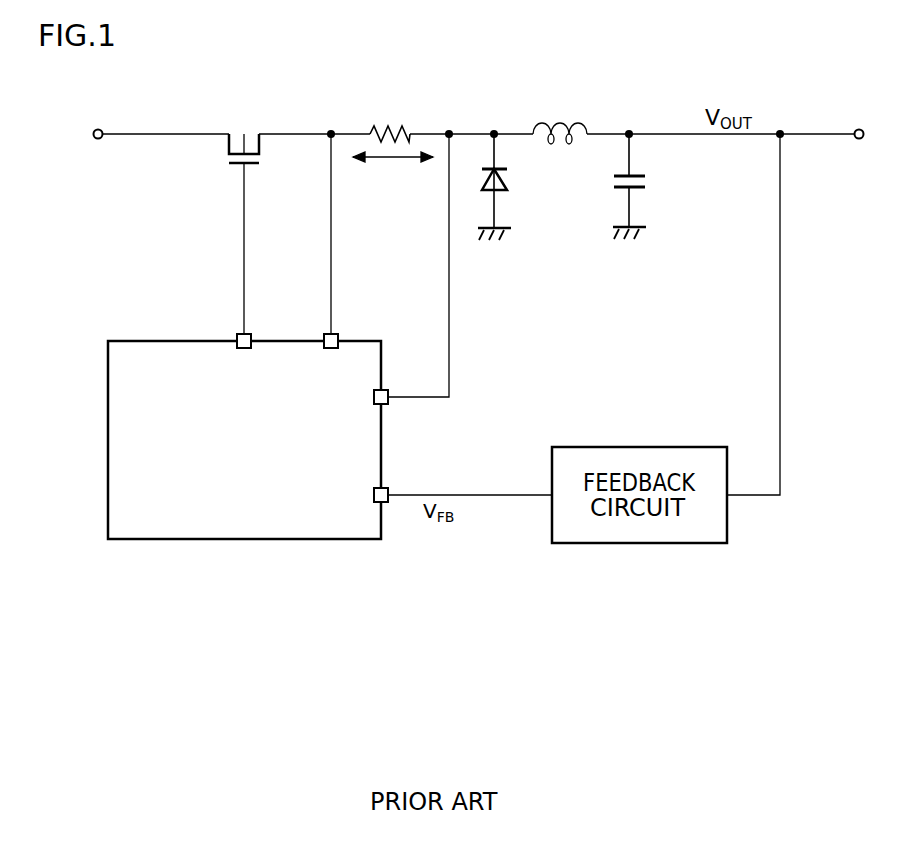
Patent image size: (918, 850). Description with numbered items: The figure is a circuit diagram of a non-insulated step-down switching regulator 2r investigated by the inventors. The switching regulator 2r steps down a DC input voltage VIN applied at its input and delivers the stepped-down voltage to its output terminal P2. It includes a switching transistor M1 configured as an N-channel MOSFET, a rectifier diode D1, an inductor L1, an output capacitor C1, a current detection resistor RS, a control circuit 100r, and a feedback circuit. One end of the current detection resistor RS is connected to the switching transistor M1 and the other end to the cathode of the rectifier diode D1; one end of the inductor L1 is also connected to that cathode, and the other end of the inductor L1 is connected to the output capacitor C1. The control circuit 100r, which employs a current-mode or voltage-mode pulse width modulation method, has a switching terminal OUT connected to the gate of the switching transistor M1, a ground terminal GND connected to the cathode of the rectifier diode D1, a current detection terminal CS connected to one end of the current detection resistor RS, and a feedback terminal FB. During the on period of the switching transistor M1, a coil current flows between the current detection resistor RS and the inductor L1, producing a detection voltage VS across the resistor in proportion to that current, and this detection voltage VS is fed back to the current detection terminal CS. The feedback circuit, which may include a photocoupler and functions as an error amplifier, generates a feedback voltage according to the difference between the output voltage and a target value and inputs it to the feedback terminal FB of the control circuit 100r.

The switching transistor M1 is at (238, 130).
The current detection resistor RS is at (380, 128).
The inductor L1 is at (576, 127).
The rectifier diode D1 is at (509, 182).
The output capacitor C1 is at (649, 182).
The output terminal P2 is at (866, 128).
The control circuit 100r is at (273, 444).
The switching regulator 2r is at (484, 677).
The switching terminal OUT is at (234, 333).
The current detection terminal CS is at (340, 333).
The ground terminal GND is at (411, 373).
The feedback terminal FB is at (390, 486).
The DC input voltage VIN is at (137, 135).
The detection voltage VS is at (393, 174).